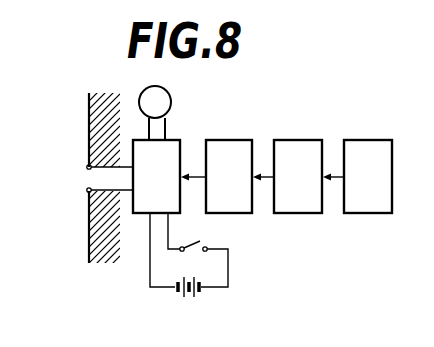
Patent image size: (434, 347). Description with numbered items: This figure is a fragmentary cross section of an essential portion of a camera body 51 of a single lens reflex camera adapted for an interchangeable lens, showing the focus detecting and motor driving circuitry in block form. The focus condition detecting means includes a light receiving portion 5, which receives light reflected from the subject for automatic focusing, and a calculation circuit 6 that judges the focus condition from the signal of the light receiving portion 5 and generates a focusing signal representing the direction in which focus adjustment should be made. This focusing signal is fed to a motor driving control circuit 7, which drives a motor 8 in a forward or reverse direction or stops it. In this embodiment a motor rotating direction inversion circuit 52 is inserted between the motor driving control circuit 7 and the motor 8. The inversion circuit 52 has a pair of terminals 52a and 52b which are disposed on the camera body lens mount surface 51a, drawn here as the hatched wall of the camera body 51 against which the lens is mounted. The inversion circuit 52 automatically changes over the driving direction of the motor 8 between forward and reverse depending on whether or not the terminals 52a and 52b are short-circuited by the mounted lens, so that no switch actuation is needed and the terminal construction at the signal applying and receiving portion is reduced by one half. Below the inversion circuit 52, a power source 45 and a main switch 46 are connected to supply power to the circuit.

The motor 8 is at (168, 100).
The light receiving portion 5 is at (360, 189).
The calculation circuit 6 is at (290, 189).
The motor driving control circuit 7 is at (221, 189).
The motor rotating direction inversion circuit 52 is at (146, 189).
The terminal 52a is at (87, 191).
The terminal 52b is at (87, 167).
The camera body 51 is at (83, 102).
The camera body lens mount surface 51a is at (88, 128).
The main switch 46 is at (200, 241).
The power source 45 is at (196, 296).